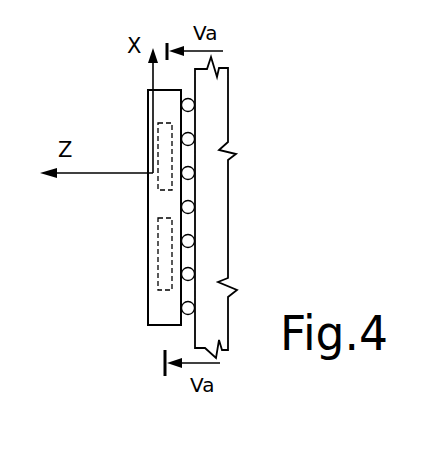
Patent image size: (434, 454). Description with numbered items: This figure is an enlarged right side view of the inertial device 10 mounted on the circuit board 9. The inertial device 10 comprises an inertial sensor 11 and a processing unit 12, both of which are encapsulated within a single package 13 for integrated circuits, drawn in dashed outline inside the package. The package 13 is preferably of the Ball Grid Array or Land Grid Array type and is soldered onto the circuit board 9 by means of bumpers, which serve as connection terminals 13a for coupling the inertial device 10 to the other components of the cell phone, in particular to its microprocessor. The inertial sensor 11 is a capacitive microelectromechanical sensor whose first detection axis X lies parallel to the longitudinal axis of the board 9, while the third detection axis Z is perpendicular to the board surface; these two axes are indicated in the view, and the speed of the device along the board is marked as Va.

The circuit board 9 is at (222, 117).
The inertial device 10 is at (154, 334).
The inertial sensor 11 is at (162, 187).
The processing unit 12 is at (162, 249).
The package 13 is at (122, 208).
The connection terminals 13a is at (195, 240).